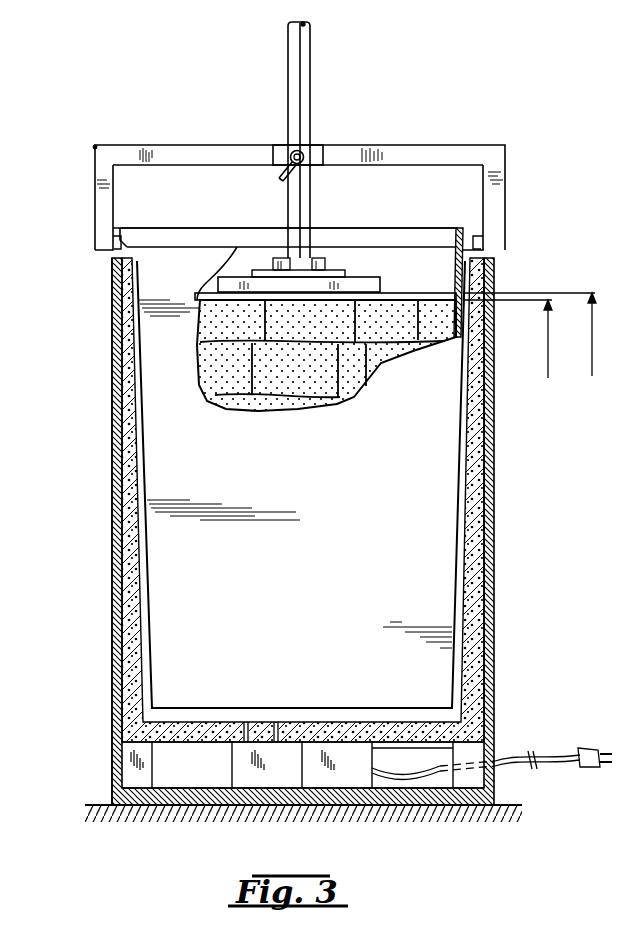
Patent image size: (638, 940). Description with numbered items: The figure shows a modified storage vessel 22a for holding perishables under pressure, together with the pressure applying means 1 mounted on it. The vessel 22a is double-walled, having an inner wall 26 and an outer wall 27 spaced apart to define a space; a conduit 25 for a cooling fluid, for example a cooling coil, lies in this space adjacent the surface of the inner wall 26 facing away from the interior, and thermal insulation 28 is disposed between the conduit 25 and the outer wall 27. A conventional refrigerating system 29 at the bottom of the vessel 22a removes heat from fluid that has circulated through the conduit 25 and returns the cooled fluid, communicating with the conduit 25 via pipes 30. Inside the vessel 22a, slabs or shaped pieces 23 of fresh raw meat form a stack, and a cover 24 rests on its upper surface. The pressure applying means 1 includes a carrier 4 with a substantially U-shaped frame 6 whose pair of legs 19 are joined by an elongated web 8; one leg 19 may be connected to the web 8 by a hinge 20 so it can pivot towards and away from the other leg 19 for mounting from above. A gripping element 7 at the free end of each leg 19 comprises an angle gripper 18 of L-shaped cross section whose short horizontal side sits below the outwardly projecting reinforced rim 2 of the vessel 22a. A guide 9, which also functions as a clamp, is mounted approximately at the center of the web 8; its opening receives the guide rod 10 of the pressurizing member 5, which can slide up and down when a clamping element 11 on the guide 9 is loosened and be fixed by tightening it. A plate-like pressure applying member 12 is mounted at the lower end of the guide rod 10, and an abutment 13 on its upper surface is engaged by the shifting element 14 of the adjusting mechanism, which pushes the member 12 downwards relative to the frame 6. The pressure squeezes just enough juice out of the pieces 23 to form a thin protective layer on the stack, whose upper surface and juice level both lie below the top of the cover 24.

The pressure applying means 1 is at (313, 440).
The rim 2 is at (184, 232).
The carrier 4 is at (145, 140).
The pressurizing member 5 is at (318, 206).
The frame 6 is at (405, 137).
The gripping element 7 is at (125, 235).
The web 8 is at (230, 153).
The guide 9 is at (316, 150).
The guide rod 10 is at (300, 63).
The clamping element 11 is at (276, 182).
The pressure applying member 12 is at (368, 284).
The abutment 13 is at (260, 268).
The shifting element 14 is at (322, 260).
The angle gripper 18 is at (111, 242).
The leg 19 is at (103, 212).
The hinge 20 is at (93, 147).
The vessel 22a is at (105, 522).
The pieces 23 is at (320, 388).
The cover 24 is at (428, 292).
The conduit 25 is at (141, 473).
The inner wall 26 is at (463, 268).
The outer wall 27 is at (488, 598).
The thermal insulation 28 is at (478, 535).
The refrigerating system 29 is at (270, 777).
The pipes 30 is at (280, 741).